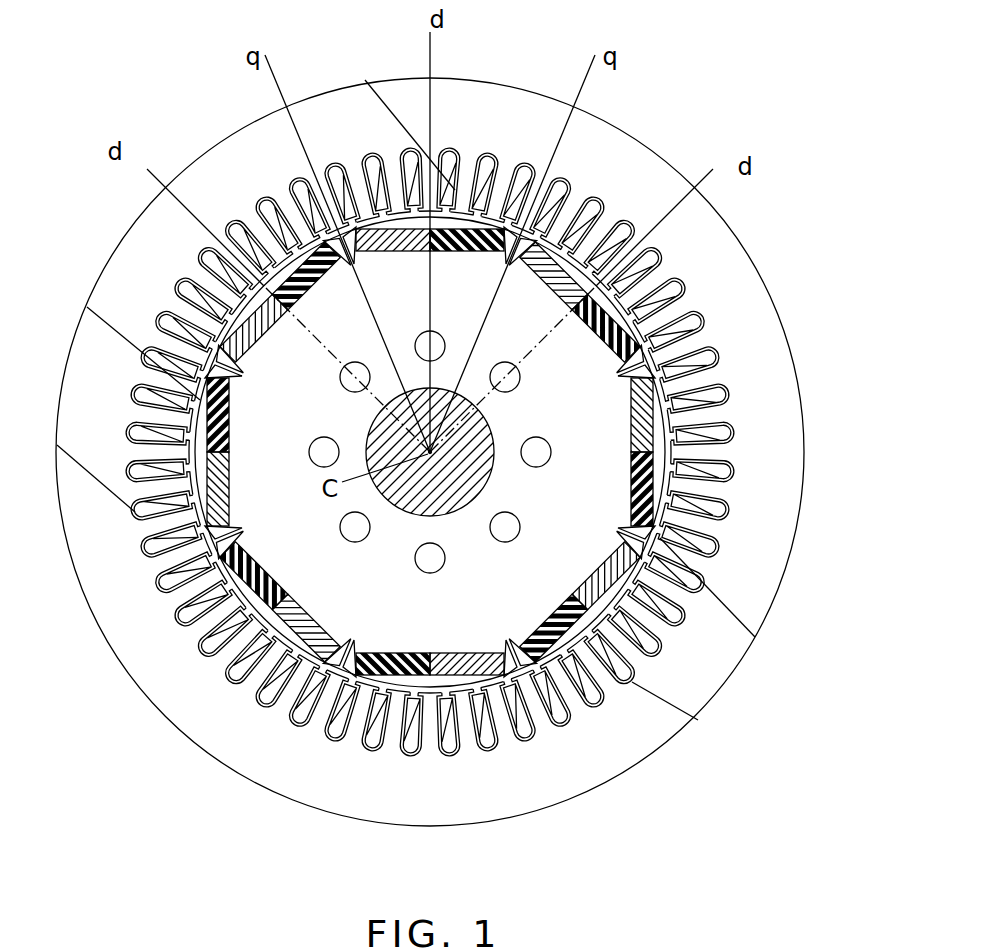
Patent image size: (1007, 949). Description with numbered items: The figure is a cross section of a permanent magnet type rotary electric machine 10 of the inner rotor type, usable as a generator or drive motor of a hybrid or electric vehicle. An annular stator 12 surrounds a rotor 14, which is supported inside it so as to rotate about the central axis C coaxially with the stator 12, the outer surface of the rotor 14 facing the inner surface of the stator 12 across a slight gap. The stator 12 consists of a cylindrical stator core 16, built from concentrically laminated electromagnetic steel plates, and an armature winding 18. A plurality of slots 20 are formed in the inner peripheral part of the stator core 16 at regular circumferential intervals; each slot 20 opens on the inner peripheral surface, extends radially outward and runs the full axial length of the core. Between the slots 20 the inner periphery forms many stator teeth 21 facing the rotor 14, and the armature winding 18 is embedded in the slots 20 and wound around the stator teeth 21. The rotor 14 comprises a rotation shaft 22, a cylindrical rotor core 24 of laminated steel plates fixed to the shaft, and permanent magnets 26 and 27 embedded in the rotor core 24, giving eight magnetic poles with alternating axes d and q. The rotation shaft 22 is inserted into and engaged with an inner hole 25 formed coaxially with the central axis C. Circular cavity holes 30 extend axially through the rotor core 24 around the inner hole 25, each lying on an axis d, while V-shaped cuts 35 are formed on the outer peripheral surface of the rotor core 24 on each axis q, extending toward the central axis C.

The rotary electric machine 10 is at (798, 270).
The stator 12 is at (808, 446).
The rotor 14 is at (692, 412).
The stator core 16 is at (772, 326).
The armature winding 18 is at (525, 173).
The slot 20 is at (140, 376).
The stator tooth 21 is at (330, 287).
The rotation shaft 22 is at (410, 512).
The rotor core 24 is at (640, 600).
The inner hole 25 is at (455, 510).
The permanent magnet 26 is at (395, 242).
The permanent magnet 27 is at (470, 243).
The cavity hole 30 is at (440, 336).
The V-shaped cut 35 is at (232, 528).